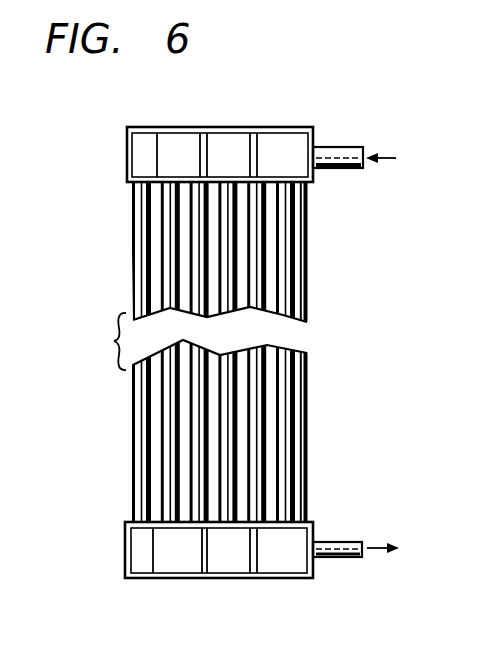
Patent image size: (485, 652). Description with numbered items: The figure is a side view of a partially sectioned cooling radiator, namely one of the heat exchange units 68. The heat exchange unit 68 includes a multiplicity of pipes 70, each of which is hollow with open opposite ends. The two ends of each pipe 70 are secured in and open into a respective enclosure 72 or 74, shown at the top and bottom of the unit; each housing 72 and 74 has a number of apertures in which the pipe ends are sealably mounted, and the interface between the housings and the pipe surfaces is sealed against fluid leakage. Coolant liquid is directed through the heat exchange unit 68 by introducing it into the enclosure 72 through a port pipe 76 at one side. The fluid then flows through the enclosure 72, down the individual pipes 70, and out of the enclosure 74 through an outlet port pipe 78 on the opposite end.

The heat exchange unit 68 is at (208, 347).
The pipe 70 is at (307, 422).
The enclosure 72 is at (222, 140).
The enclosure 74 is at (207, 579).
The port pipe 76 is at (340, 147).
The outlet port pipe 78 is at (338, 558).